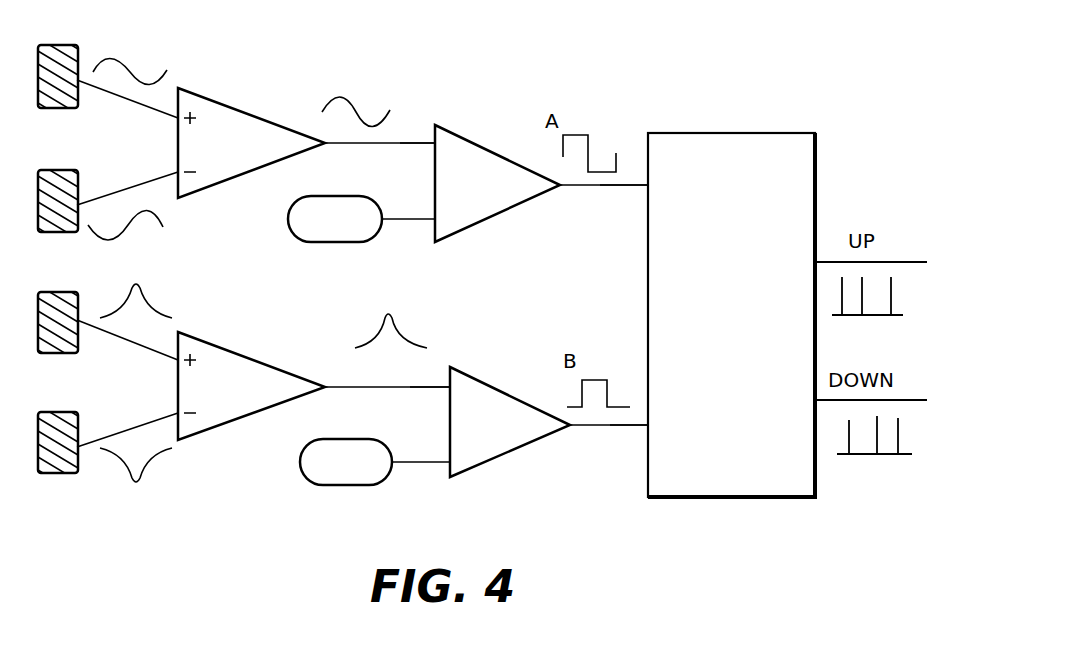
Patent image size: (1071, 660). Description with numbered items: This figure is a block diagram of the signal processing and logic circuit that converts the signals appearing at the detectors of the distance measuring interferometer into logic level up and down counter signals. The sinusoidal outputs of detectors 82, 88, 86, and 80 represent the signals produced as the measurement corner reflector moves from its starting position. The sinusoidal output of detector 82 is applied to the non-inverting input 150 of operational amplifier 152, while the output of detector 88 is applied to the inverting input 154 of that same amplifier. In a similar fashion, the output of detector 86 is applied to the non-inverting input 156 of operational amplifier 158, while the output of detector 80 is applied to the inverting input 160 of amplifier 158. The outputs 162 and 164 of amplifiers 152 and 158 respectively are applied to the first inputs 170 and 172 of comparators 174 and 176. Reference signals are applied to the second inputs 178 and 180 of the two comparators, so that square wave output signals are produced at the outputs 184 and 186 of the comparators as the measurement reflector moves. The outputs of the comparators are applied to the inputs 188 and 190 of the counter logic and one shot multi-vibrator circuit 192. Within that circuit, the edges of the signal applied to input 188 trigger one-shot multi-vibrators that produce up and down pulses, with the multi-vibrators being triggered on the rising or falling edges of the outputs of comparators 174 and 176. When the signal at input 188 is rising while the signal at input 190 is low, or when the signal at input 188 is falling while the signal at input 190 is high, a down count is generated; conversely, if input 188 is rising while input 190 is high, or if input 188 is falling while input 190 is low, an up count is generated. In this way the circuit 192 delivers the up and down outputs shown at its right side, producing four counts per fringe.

The detector 80 is at (48, 412).
The detector 82 is at (58, 45).
The detector 86 is at (48, 292).
The detector 88 is at (52, 170).
The non-inverting input 150 is at (175, 118).
The operational amplifier 152 is at (252, 88).
The inverting input 154 is at (175, 170).
The non-inverting input 156 is at (175, 360).
The operational amplifier 158 is at (245, 352).
The inverting input 160 is at (175, 413).
The amplifier output 162 is at (327, 147).
The amplifier output 164 is at (327, 390).
The first comparator input 170 is at (430, 148).
The first comparator input 172 is at (448, 378).
The comparator 174 is at (493, 150).
The comparator 176 is at (496, 392).
The second comparator input 178 is at (432, 225).
The second comparator input 180 is at (446, 470).
The comparator output 184 is at (560, 188).
The comparator output 186 is at (571, 432).
The counter logic input 188 is at (645, 187).
The counter logic input 190 is at (647, 428).
The counter logic and one shot multi-vibrator circuit 192 is at (728, 133).